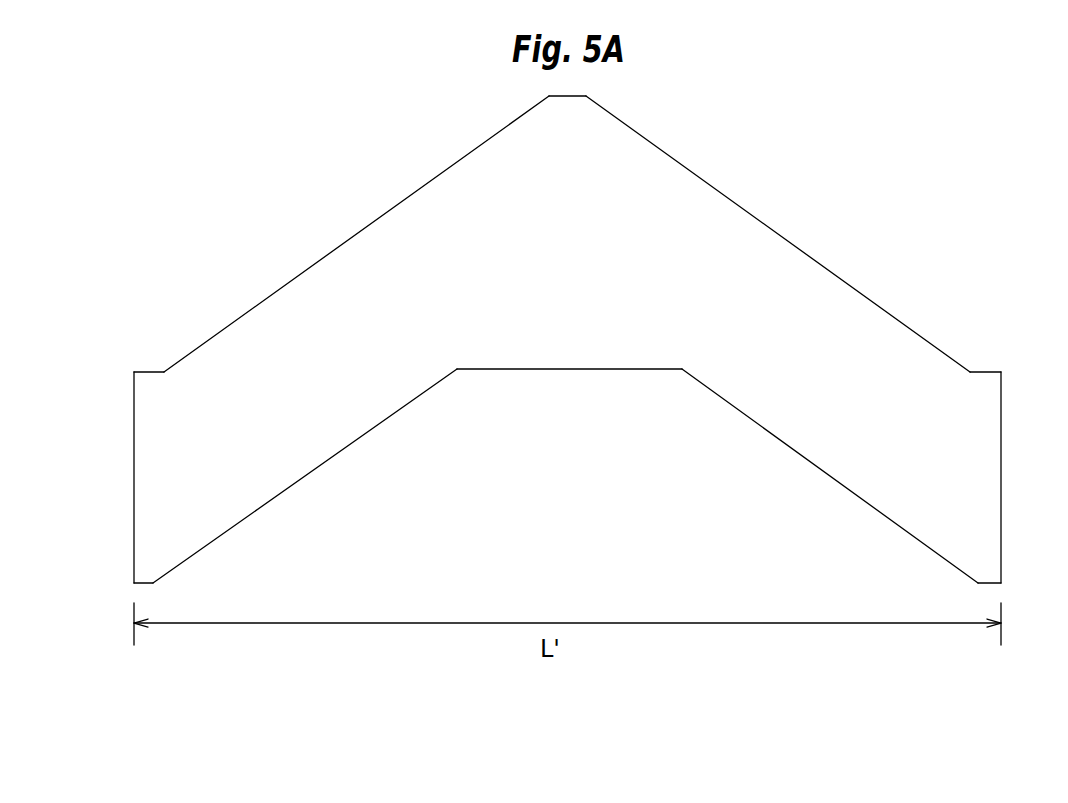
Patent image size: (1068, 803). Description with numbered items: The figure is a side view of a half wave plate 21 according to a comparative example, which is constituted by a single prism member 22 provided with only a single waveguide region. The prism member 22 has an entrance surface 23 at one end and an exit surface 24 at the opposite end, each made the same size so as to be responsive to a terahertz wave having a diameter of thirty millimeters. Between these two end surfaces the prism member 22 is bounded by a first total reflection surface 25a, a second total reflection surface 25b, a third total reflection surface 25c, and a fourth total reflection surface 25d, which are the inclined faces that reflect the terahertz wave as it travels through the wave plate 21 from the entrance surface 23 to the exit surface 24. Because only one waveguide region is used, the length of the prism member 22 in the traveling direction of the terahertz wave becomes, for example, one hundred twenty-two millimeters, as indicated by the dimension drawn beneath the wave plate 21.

The wave plate 21 is at (736, 110).
The prism member 22 is at (654, 343).
The entrance surface 23 is at (134, 430).
The exit surface 24 is at (1001, 487).
The first total reflection surface 25a is at (315, 475).
The second total reflection surface 25b is at (365, 222).
The third total reflection surface 25c is at (745, 205).
The fourth total reflection surface 25d is at (820, 478).